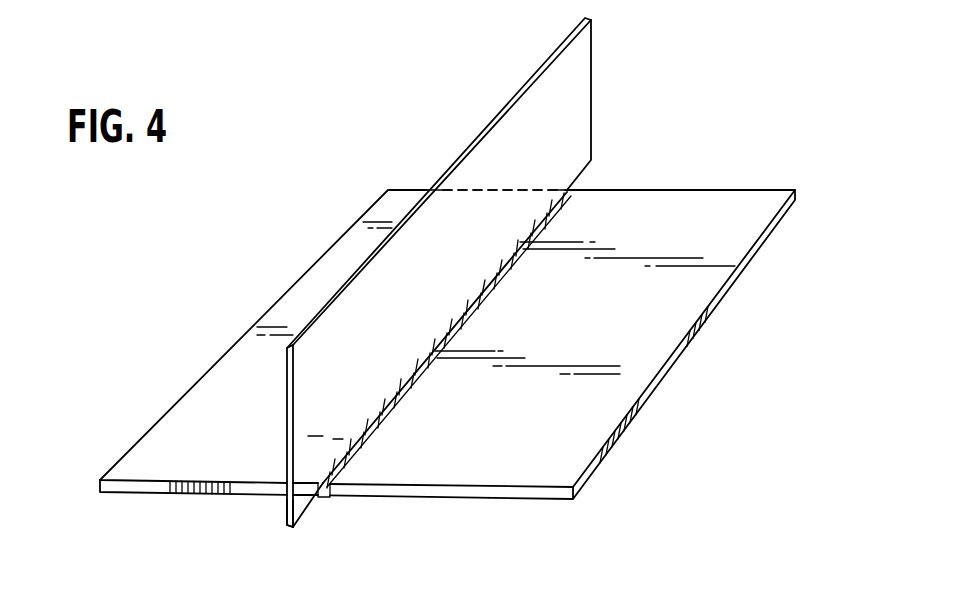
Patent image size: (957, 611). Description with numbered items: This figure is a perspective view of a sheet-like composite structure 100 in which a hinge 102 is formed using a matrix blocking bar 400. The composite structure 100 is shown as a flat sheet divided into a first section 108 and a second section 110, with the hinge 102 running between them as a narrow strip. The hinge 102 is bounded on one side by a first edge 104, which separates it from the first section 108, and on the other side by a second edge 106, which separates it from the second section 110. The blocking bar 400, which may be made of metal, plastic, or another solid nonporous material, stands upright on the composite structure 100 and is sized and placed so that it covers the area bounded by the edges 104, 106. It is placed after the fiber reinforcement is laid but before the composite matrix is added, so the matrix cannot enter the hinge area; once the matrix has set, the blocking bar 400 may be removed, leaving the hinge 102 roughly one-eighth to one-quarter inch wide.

The composite structure 100 is at (697, 91).
The hinge 102 is at (338, 467).
The first edge 104 is at (392, 413).
The second edge 106 is at (278, 468).
The first section 108 is at (578, 433).
The second section 110 is at (288, 307).
The blocking bar 400 is at (453, 182).